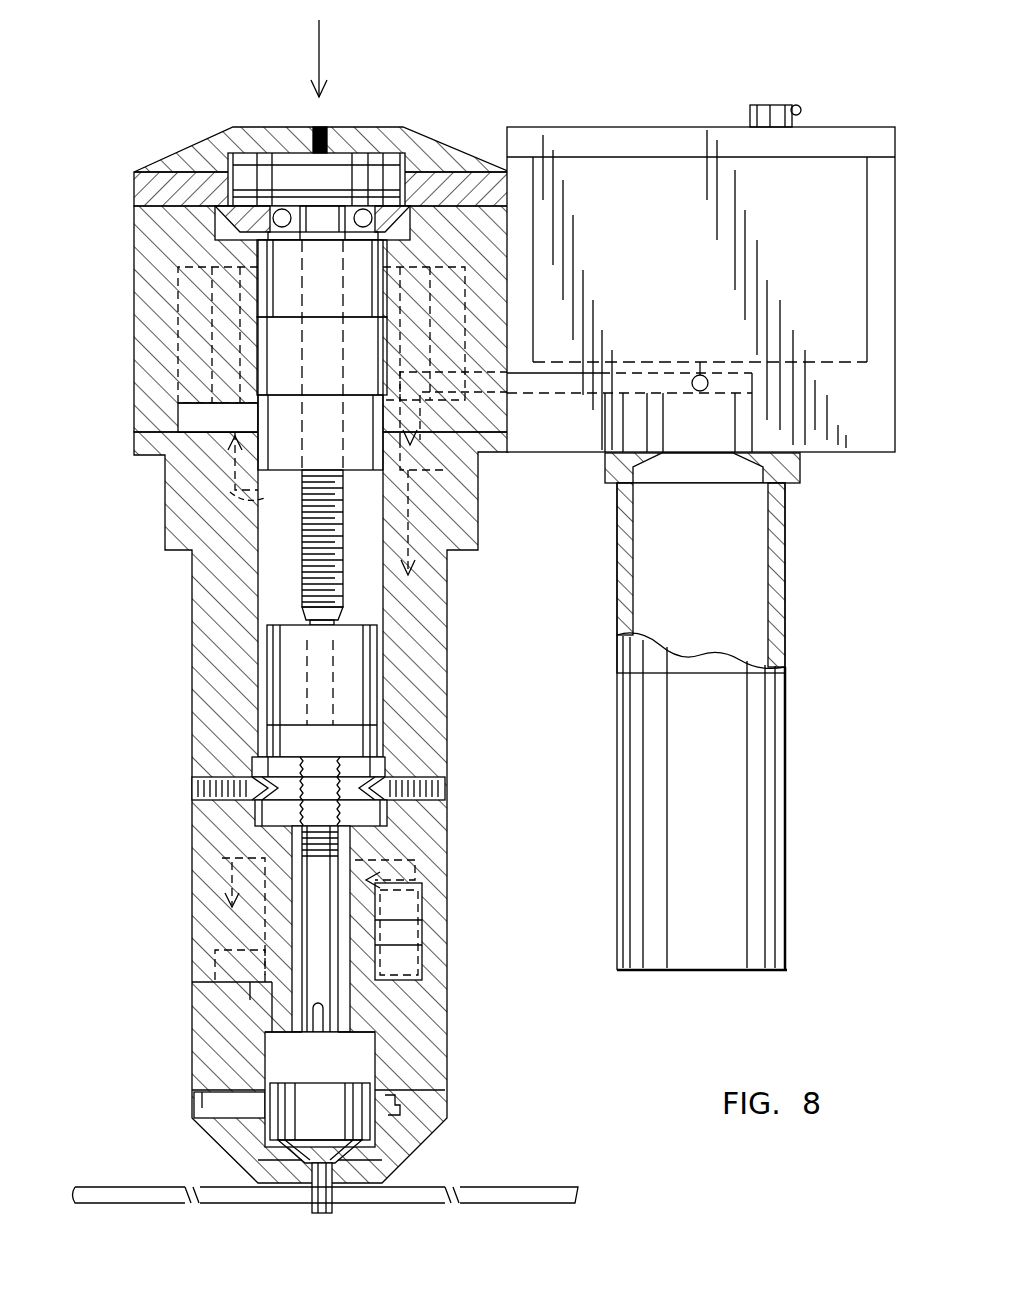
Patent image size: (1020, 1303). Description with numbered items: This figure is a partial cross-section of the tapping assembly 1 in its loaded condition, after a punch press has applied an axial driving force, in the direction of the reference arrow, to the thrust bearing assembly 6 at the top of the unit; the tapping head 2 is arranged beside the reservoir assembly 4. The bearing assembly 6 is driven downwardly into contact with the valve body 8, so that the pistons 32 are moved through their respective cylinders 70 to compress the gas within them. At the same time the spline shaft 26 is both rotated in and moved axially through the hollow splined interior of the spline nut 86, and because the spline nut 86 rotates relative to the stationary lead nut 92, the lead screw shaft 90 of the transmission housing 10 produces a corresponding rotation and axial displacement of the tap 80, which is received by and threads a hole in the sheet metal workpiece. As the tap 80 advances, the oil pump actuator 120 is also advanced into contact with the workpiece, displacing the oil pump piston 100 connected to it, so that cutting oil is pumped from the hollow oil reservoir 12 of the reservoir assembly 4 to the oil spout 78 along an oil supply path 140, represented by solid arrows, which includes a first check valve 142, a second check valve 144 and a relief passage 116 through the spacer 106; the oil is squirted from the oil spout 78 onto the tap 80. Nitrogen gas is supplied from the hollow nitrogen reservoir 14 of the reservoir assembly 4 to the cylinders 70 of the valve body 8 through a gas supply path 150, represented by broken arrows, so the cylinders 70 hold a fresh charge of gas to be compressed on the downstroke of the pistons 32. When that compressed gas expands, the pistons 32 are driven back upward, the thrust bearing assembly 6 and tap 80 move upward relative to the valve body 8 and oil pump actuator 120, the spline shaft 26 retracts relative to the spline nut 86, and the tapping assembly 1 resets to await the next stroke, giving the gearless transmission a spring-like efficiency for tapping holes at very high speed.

The tapping assembly 1 is at (500, 92).
The dispensing head 2 is at (140, 486).
The reservoir assembly 4 is at (832, 470).
The thrust bearing assembly 6 is at (155, 163).
The valve body 8 is at (134, 253).
The transmission housing 10 is at (192, 660).
The hollow oil reservoir 12 is at (643, 125).
The hollow nitrogen reservoir 14 is at (786, 818).
The spline shaft 26 is at (300, 572).
The pistons 32 is at (187, 423).
The cylinders 70 is at (178, 357).
The oil spout 78 is at (240, 1138).
The tap 80 is at (312, 1210).
The spline nut 86 is at (275, 705).
The lead screw shaft 90 is at (315, 928).
The lead nut 92 is at (255, 812).
The oil pump piston 100 is at (402, 940).
The spacer 106 is at (192, 1067).
The relief passage 116 is at (238, 1017).
The oil pump actuator 120 is at (203, 1105).
The oil supply path 140 is at (455, 490).
The first check valve 142 is at (560, 385).
The second check valve 144 is at (238, 962).
The gas supply path 150 is at (230, 492).